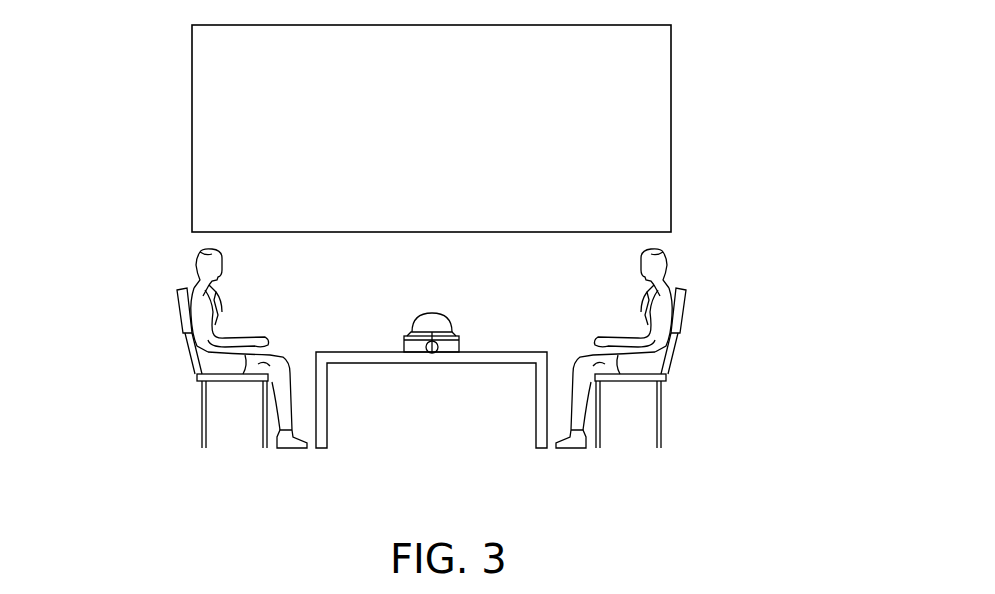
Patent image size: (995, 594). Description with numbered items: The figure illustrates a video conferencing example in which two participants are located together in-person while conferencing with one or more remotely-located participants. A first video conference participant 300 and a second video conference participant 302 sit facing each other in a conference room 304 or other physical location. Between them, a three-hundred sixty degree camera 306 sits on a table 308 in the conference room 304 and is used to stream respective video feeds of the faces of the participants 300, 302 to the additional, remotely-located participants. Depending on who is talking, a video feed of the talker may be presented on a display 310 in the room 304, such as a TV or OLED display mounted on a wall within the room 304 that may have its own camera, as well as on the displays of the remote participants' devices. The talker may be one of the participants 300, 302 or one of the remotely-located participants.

The first video conference participant 300 is at (198, 262).
The second video conference participant 302 is at (665, 260).
The conference room 304 is at (102, 72).
The three-hundred sixty degree camera 306 is at (431, 312).
The table 308 is at (355, 352).
The display 310 is at (458, 142).